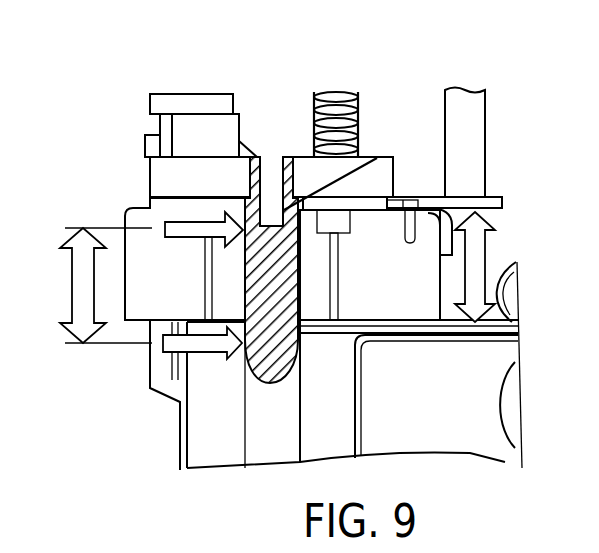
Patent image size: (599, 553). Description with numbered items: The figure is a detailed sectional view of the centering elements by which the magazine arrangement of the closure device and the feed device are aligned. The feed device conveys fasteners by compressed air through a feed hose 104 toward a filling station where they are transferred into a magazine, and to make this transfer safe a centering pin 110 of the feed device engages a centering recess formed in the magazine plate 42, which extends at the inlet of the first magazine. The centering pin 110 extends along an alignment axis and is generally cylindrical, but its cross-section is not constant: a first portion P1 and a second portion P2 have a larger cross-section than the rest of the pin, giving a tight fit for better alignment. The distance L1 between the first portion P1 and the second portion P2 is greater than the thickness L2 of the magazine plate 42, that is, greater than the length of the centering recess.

The feed hose 104 is at (180, 108).
The centering pin 110 is at (375, 158).
The magazine plate 42 is at (415, 297).
The first portion P1 is at (224, 226).
The second portion P2 is at (180, 345).
The distance between the first portion and the second portion L1 is at (78, 290).
The thickness of the magazine plate L2 is at (473, 257).